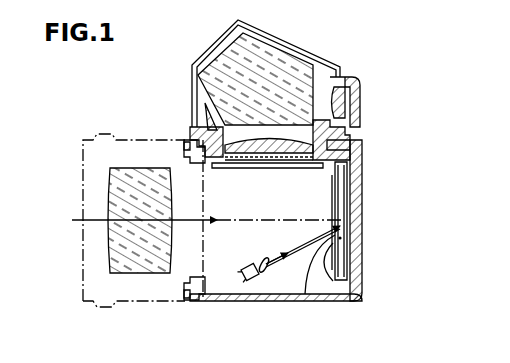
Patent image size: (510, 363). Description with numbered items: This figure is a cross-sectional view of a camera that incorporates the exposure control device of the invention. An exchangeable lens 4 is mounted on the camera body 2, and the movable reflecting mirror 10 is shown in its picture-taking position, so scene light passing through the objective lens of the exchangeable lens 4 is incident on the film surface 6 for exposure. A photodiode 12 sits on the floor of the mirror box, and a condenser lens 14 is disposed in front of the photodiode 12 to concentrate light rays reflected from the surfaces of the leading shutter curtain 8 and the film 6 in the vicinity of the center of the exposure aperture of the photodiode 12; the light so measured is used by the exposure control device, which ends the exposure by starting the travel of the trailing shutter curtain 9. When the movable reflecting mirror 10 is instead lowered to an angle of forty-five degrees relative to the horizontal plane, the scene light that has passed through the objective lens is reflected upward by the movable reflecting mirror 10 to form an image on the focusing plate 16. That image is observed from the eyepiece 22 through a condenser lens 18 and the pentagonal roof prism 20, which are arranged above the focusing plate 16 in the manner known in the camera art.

The camera body 2 is at (284, 33).
The exchangeable lens 4 is at (157, 137).
The film surface 6 is at (342, 238).
The leading shutter curtain 8 is at (347, 301).
The trailing shutter curtain 9 is at (306, 295).
The movable reflecting mirror 10 is at (266, 167).
The photodiode 12 is at (249, 284).
The condenser lens 14 is at (267, 272).
The focusing plate 16 is at (356, 152).
The condenser lens 18 is at (345, 135).
The pentagonal roof prism 20 is at (296, 80).
The eyepiece 22 is at (354, 100).